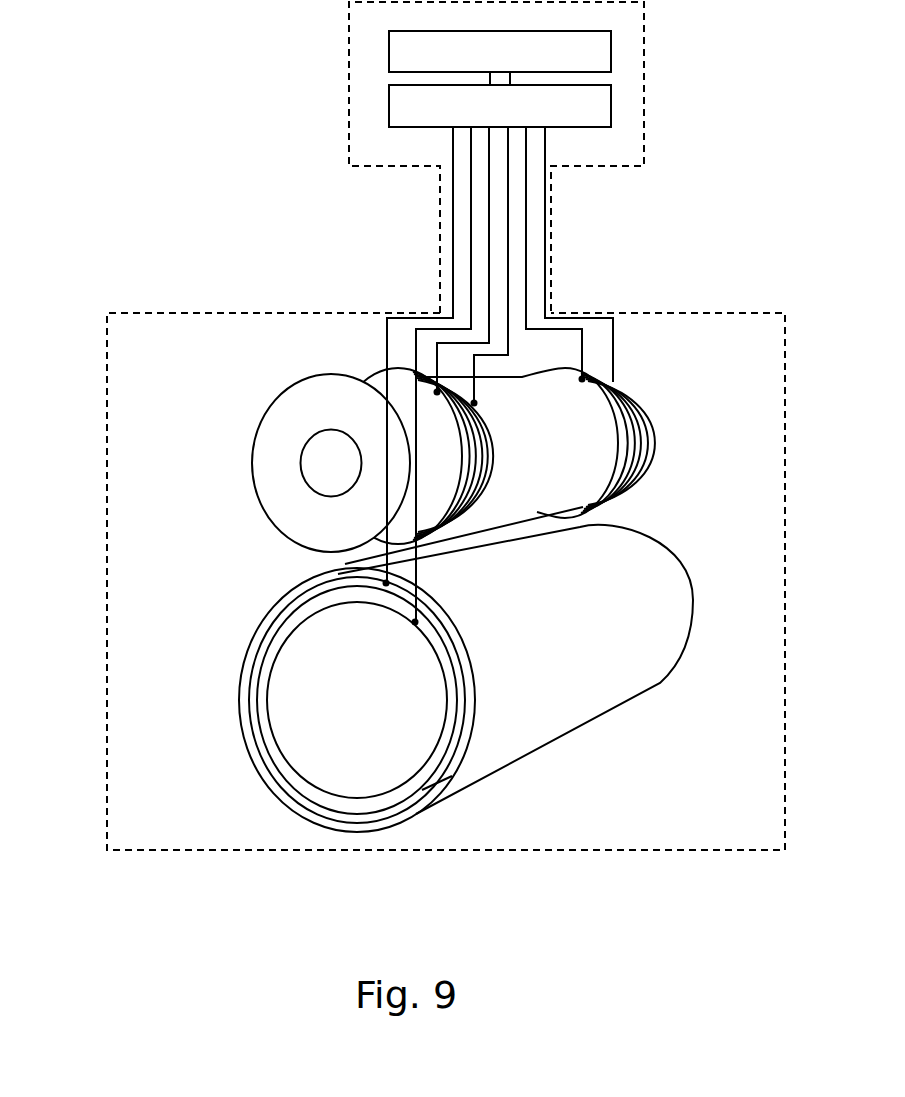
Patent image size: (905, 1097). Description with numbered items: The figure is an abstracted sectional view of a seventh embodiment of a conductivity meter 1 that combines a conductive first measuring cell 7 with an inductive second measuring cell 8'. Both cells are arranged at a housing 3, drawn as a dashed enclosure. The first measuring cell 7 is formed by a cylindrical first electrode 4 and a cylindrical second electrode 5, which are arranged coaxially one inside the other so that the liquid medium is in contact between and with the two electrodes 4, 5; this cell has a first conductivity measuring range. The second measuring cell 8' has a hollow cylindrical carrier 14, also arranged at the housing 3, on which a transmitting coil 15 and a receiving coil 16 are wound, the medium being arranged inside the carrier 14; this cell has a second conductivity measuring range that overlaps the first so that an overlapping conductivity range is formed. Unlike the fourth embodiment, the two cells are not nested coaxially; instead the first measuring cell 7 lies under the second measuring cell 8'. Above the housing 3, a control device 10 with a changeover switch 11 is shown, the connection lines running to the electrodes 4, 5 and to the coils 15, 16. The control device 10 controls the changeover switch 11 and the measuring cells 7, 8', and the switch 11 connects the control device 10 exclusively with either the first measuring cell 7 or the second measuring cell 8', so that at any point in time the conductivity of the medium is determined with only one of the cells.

The conductivity meter 1 is at (683, 200).
The housing 3 is at (740, 824).
The first electrode 4 is at (379, 678).
The second electrode 5 is at (270, 738).
The first measuring cell 7 is at (273, 767).
The second measuring cell 8' is at (445, 509).
The control device 10 is at (440, 65).
The changeover switch 11 is at (440, 119).
The hollow cylindrical carrier 14 is at (290, 497).
The transmitting coil 15 is at (470, 535).
The receiving coil 16 is at (634, 501).